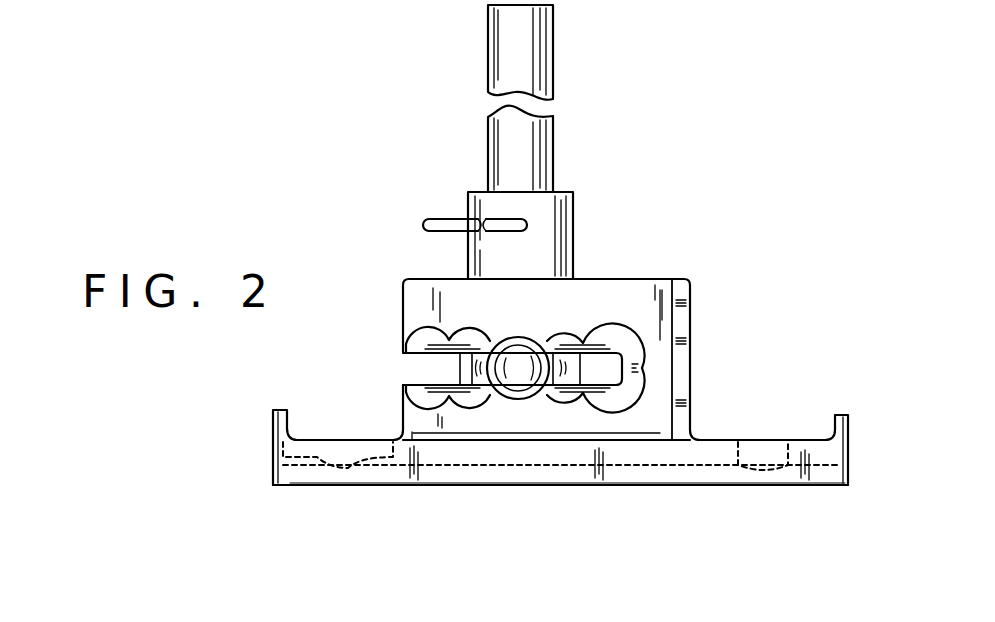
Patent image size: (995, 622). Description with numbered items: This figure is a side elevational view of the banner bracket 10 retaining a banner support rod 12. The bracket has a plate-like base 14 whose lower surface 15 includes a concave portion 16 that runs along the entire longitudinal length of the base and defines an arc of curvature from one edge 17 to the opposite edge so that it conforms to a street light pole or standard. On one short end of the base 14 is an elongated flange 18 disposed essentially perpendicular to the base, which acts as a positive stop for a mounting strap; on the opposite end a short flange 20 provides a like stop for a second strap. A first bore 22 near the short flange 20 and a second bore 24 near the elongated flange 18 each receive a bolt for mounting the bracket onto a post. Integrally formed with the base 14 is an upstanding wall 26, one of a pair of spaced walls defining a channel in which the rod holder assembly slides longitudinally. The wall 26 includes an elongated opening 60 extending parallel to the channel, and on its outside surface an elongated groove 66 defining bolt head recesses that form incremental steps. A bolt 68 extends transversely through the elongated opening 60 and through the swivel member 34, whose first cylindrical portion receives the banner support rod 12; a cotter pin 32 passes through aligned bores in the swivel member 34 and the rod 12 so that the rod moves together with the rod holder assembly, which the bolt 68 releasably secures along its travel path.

The banner bracket 10 is at (664, 117).
The banner support rod 12 is at (507, 157).
The base 14 is at (704, 448).
The lower surface 15 is at (562, 487).
The concave portion 16 is at (510, 466).
The edge 17 is at (445, 50).
The elongated flange 18 is at (840, 414).
The short flange 20 is at (280, 410).
The first bore 22 is at (338, 470).
The second bore 24 is at (763, 472).
The upstanding wall 26 is at (640, 322).
The cotter pin 32 is at (424, 221).
The swivel member 34 is at (557, 228).
The elongated opening 60 is at (427, 368).
The elongated groove 66 is at (627, 392).
The bolt 68 is at (523, 350).